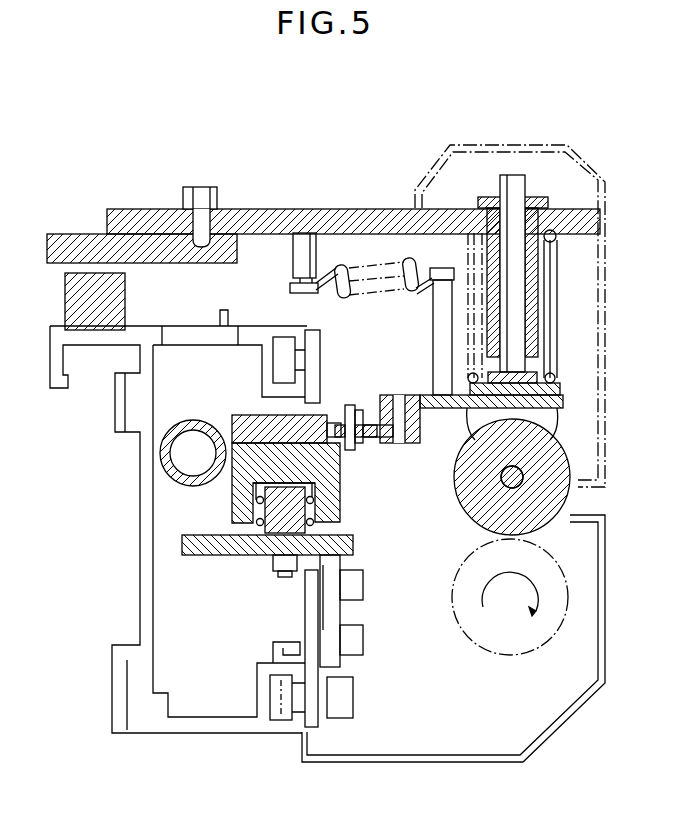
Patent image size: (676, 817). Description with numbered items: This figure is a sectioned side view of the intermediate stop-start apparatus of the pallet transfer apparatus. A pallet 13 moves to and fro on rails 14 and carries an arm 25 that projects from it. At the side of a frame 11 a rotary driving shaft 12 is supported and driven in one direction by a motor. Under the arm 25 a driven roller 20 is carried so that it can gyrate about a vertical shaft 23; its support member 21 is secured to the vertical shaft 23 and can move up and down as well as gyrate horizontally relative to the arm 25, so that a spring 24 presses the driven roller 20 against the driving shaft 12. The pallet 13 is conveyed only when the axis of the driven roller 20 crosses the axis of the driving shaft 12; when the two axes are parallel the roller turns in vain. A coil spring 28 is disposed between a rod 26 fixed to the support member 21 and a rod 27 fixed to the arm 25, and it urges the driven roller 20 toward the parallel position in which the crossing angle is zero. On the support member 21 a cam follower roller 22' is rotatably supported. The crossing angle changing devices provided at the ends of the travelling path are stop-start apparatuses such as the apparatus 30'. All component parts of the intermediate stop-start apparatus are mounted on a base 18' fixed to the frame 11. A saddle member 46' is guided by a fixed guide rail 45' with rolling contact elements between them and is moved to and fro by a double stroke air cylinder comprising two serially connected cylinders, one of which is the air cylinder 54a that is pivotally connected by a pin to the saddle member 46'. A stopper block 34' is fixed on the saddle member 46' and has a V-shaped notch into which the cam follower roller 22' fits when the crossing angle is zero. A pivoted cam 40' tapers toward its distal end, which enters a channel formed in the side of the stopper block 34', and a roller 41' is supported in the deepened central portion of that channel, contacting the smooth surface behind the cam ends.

The frame 11 is at (148, 488).
The rotary driving shaft 12 is at (548, 582).
The pallet 13 is at (123, 242).
The rail 14 is at (68, 292).
The base 18' is at (267, 567).
The driven roller 20 is at (557, 455).
The support member 21 is at (548, 412).
The cam follower roller 22' is at (413, 444).
The vertical shaft 23 is at (520, 200).
The spring 24 is at (556, 290).
The arm 25 is at (378, 212).
The rod 26 is at (445, 322).
The rod 27 is at (300, 258).
The coil spring 28 is at (355, 293).
The stop-start apparatus 30' is at (425, 527).
The stopper block 34' is at (298, 400).
The cam 40' is at (369, 397).
The roller 41' is at (371, 449).
The guide rail 45' is at (245, 508).
The saddle member 46' is at (309, 485).
The air cylinder 54a is at (195, 425).